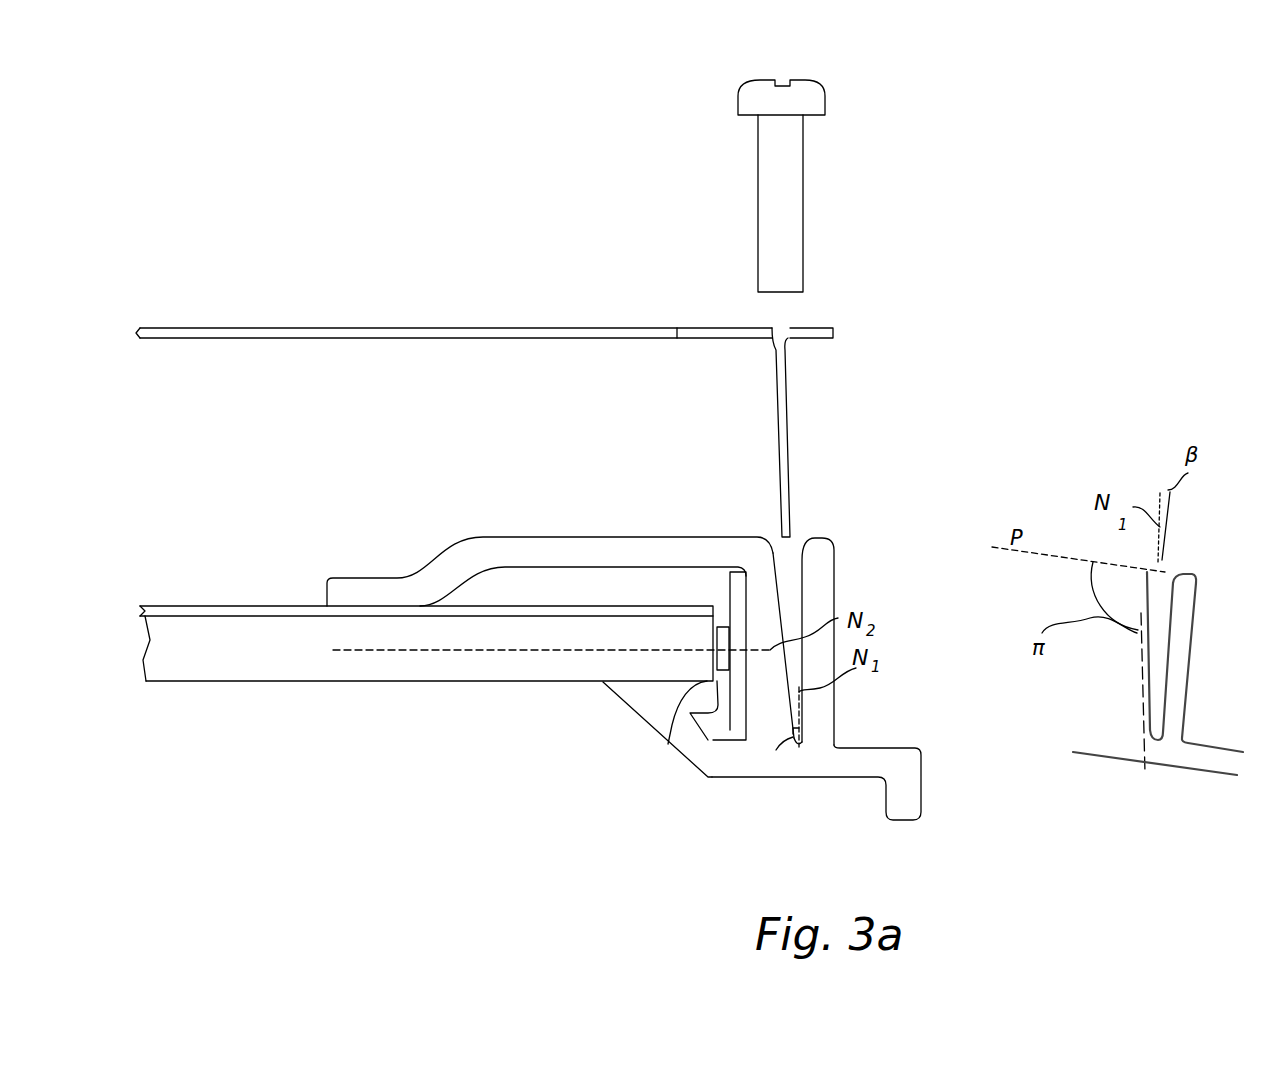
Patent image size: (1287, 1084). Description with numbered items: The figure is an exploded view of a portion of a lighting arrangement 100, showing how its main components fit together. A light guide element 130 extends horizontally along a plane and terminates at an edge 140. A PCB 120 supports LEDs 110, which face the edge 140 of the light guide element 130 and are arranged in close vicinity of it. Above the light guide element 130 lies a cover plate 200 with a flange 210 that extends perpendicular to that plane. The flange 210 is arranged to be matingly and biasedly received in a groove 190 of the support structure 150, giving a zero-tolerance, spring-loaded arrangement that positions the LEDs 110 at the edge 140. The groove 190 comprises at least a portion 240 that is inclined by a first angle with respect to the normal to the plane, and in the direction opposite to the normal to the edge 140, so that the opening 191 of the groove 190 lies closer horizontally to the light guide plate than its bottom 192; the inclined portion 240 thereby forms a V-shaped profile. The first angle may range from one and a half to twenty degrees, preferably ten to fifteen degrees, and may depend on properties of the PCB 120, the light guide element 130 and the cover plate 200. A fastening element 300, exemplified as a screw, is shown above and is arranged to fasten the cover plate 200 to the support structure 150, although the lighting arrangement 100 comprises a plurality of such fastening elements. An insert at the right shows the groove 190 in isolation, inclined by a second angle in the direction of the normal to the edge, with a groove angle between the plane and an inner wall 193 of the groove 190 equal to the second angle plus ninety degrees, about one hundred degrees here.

The lighting arrangement 100 is at (887, 313).
The LEDs 110 is at (716, 647).
The PCB 120 is at (735, 718).
The light guide element 130 is at (502, 696).
The edge 140 is at (724, 721).
The support structure 150 is at (908, 670).
The groove 190 is at (793, 607).
The opening 191 is at (788, 555).
The bottom 192 is at (795, 750).
The inner wall 193 is at (1143, 707).
The cover plate 200 is at (478, 328).
The flange 210 is at (785, 490).
The portion 240 is at (772, 727).
The fastening element 300 is at (802, 102).